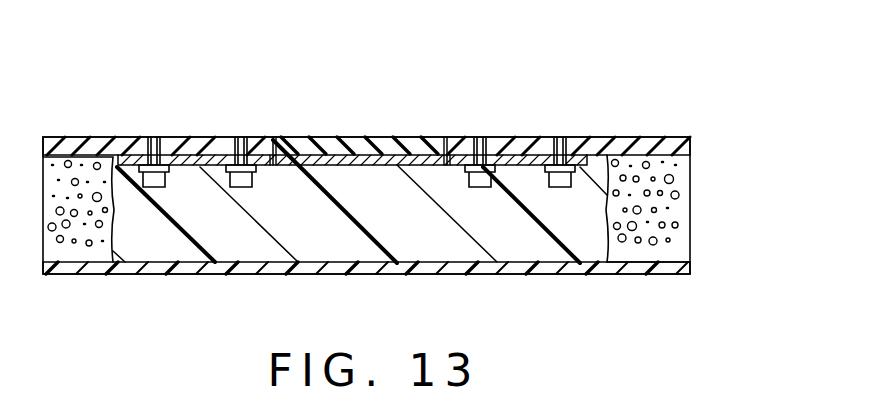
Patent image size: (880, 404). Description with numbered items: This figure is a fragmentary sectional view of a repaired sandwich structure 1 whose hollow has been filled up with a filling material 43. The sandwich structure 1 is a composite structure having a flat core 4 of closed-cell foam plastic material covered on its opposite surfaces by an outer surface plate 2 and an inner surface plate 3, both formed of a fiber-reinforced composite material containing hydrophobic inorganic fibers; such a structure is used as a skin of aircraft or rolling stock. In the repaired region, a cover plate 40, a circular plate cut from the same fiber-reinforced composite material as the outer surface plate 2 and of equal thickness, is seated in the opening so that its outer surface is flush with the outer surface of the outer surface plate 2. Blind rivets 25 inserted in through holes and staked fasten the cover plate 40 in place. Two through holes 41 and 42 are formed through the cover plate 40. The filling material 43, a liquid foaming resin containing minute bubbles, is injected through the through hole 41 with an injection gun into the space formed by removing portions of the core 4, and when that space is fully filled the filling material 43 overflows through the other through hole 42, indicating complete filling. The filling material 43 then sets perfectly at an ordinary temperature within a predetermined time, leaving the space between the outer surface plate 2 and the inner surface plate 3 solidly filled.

The sandwich structure 1 is at (84, 108).
The outer surface plate 2 is at (645, 147).
The inner surface plate 3 is at (644, 268).
The core 4 is at (673, 217).
The blind rivets 25 is at (241, 137).
The cover plate 40 is at (363, 150).
The through hole 41 is at (284, 148).
The through hole 42 is at (430, 148).
The filling material 43 is at (341, 238).